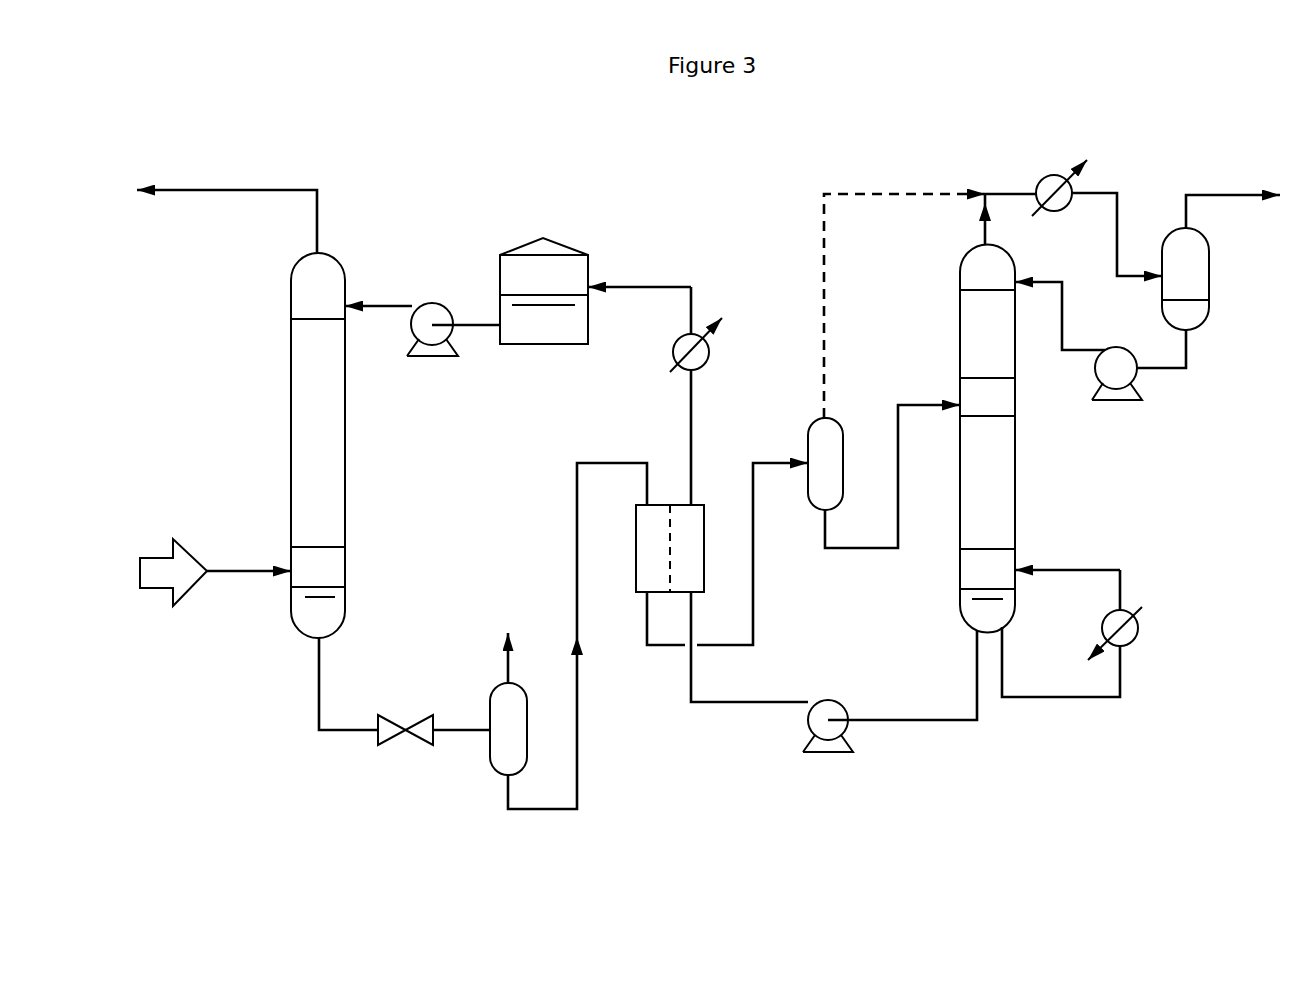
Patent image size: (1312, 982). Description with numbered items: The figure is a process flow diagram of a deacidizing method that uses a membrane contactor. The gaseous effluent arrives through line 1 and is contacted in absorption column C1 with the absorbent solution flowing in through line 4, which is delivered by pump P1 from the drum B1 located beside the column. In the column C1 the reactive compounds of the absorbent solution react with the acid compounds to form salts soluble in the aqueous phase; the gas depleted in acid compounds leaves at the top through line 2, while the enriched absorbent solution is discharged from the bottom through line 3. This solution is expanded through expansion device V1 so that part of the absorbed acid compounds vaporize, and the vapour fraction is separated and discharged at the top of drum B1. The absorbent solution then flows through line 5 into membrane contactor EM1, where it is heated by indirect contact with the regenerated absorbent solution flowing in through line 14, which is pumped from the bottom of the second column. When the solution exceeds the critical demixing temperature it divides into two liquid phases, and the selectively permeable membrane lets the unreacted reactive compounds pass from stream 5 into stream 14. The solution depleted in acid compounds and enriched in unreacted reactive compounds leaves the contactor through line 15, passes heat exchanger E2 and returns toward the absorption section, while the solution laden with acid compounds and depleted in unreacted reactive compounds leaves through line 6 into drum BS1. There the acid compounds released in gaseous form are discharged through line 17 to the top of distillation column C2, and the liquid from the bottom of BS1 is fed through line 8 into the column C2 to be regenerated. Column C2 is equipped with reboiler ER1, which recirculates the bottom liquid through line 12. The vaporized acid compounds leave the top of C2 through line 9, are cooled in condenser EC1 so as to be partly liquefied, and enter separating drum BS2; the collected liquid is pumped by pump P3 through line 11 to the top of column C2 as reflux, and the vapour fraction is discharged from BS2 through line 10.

The line 1 is at (252, 574).
The line 2 is at (232, 190).
The line 3 is at (347, 734).
The line 4 is at (388, 306).
The line 5 is at (578, 753).
The line 6 is at (754, 587).
The line 8 is at (922, 403).
The line 9 is at (985, 226).
The line 10 is at (1215, 195).
The line 11 is at (1063, 321).
The line 12 is at (1065, 698).
The line 14 is at (753, 703).
The line 15 is at (689, 415).
The line 17 is at (826, 309).
The absorption column C1 is at (347, 451).
The distillation column C2 is at (1015, 465).
The pump P1 is at (453, 346).
The pump P3 is at (1117, 390).
The drum B1 is at (543, 344).
The separating drum BS1 is at (810, 428).
The separating drum BS2 is at (1210, 288).
The heat exchanger E2 is at (673, 329).
The condenser EC1 is at (1097, 208).
The reboiler ER1 is at (1141, 633).
The membrane contactor EM1 is at (645, 548).
The expansion device V1 is at (434, 745).